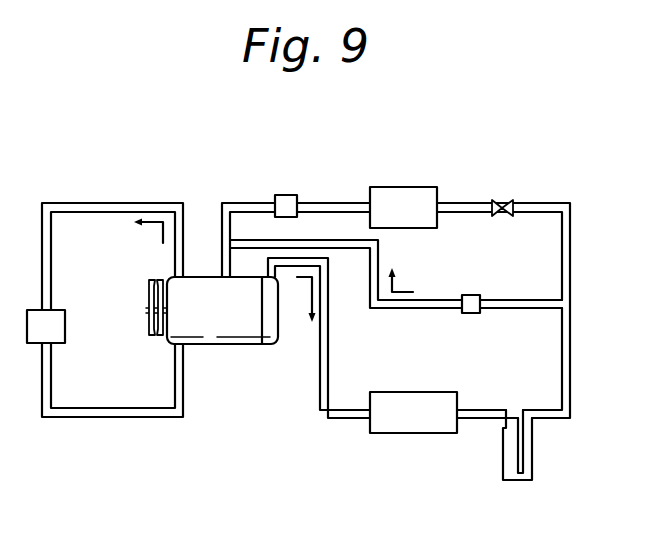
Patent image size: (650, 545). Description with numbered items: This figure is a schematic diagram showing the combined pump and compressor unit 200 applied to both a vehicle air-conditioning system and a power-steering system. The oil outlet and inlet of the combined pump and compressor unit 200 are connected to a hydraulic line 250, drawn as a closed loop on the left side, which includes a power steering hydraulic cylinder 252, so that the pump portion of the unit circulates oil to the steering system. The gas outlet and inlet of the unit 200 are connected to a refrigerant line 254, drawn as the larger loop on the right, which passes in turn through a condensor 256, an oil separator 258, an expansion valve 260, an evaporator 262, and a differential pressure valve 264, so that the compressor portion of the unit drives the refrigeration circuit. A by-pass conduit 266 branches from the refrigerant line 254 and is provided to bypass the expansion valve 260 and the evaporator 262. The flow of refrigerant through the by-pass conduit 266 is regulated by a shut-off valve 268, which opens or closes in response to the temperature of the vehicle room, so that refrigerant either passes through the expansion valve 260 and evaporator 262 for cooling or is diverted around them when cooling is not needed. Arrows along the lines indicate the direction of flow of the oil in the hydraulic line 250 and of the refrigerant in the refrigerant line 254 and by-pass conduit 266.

The combined pump and compressor unit 200 is at (225, 344).
The hydraulic line 250 is at (143, 417).
The power steering hydraulic cylinder 252 is at (58, 343).
The refrigerant line 254 is at (570, 337).
The condensor 256 is at (415, 433).
The oil separator 258 is at (504, 477).
The expansion valve 260 is at (510, 201).
The evaporator 262 is at (420, 187).
The differential pressure valve 264 is at (287, 195).
The by-pass conduit 266 is at (415, 308).
The shut-off valve 268 is at (473, 313).